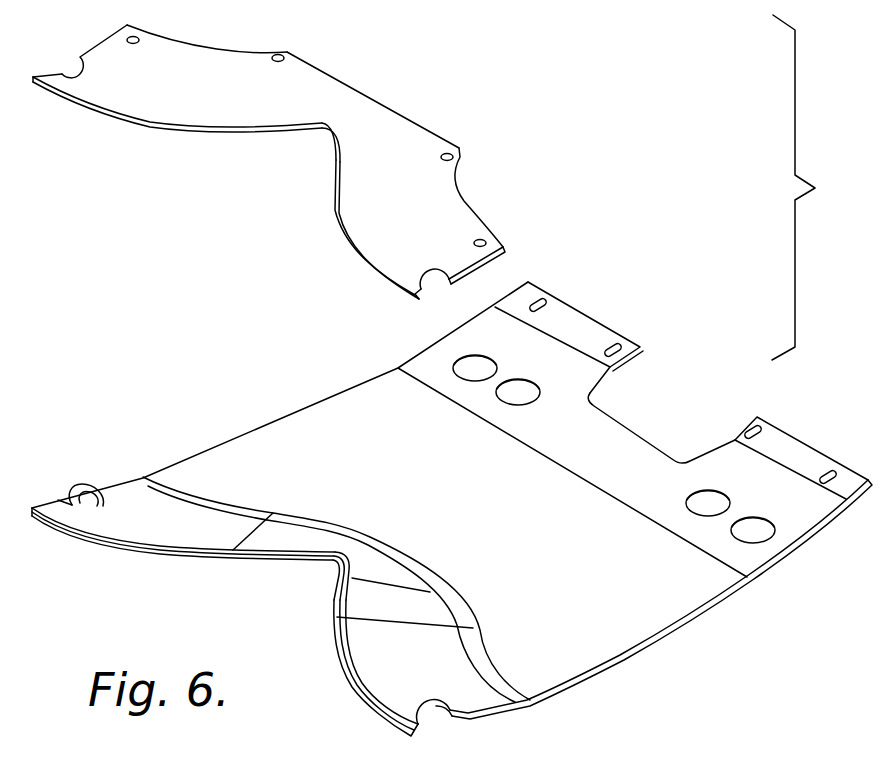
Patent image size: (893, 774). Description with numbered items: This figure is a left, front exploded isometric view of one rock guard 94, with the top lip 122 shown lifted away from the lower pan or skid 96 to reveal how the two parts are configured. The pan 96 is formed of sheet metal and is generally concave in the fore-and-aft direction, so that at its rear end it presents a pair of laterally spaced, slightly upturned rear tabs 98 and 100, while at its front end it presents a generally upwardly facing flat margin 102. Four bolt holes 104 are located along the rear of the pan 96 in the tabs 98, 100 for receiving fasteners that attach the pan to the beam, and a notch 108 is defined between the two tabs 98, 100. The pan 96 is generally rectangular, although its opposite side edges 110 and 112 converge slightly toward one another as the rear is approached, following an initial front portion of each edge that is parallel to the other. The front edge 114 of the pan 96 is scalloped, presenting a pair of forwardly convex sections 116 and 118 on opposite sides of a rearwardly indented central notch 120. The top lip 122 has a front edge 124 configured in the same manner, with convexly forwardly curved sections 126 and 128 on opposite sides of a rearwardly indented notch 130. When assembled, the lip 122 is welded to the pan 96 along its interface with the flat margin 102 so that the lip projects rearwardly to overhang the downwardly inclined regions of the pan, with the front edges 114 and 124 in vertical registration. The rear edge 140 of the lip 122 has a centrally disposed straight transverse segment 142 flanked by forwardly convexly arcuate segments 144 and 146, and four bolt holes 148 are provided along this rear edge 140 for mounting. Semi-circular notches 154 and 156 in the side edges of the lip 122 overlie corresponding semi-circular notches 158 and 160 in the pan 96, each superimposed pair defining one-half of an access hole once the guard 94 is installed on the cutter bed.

The guard 94 is at (462, 504).
The lower pan or skid 96 is at (560, 660).
The rear tab 98 is at (570, 315).
The rear tab 100 is at (800, 447).
The flat margin 102 is at (355, 686).
The bolt holes 104 is at (538, 302).
The notch 108 is at (660, 403).
The side edge 110 is at (700, 607).
The side edge 112 is at (298, 407).
The front edge 114 is at (281, 606).
The forwardly convex section 116 is at (108, 549).
The forwardly convex section 118 is at (331, 625).
The notch 120 is at (330, 563).
The top lip 122 is at (201, 108).
The front edge 124 is at (170, 100).
The convexly forwardly curved section 126 is at (86, 108).
The convexly forwardly curved section 128 is at (344, 242).
The notch 130 is at (325, 127).
The rear edge 140 is at (284, 153).
The straight transverse segment 142 is at (358, 88).
The forwardly convexly arcuate segment 144 is at (197, 43).
The forwardly convexly arcuate segment 146 is at (464, 196).
The bolt holes 148 is at (283, 52).
The semi-circular notch 154 is at (66, 73).
The semi-circular notch 156 is at (443, 274).
The semi-circular notch 158 is at (52, 500).
The semi-circular notch 160 is at (434, 721).